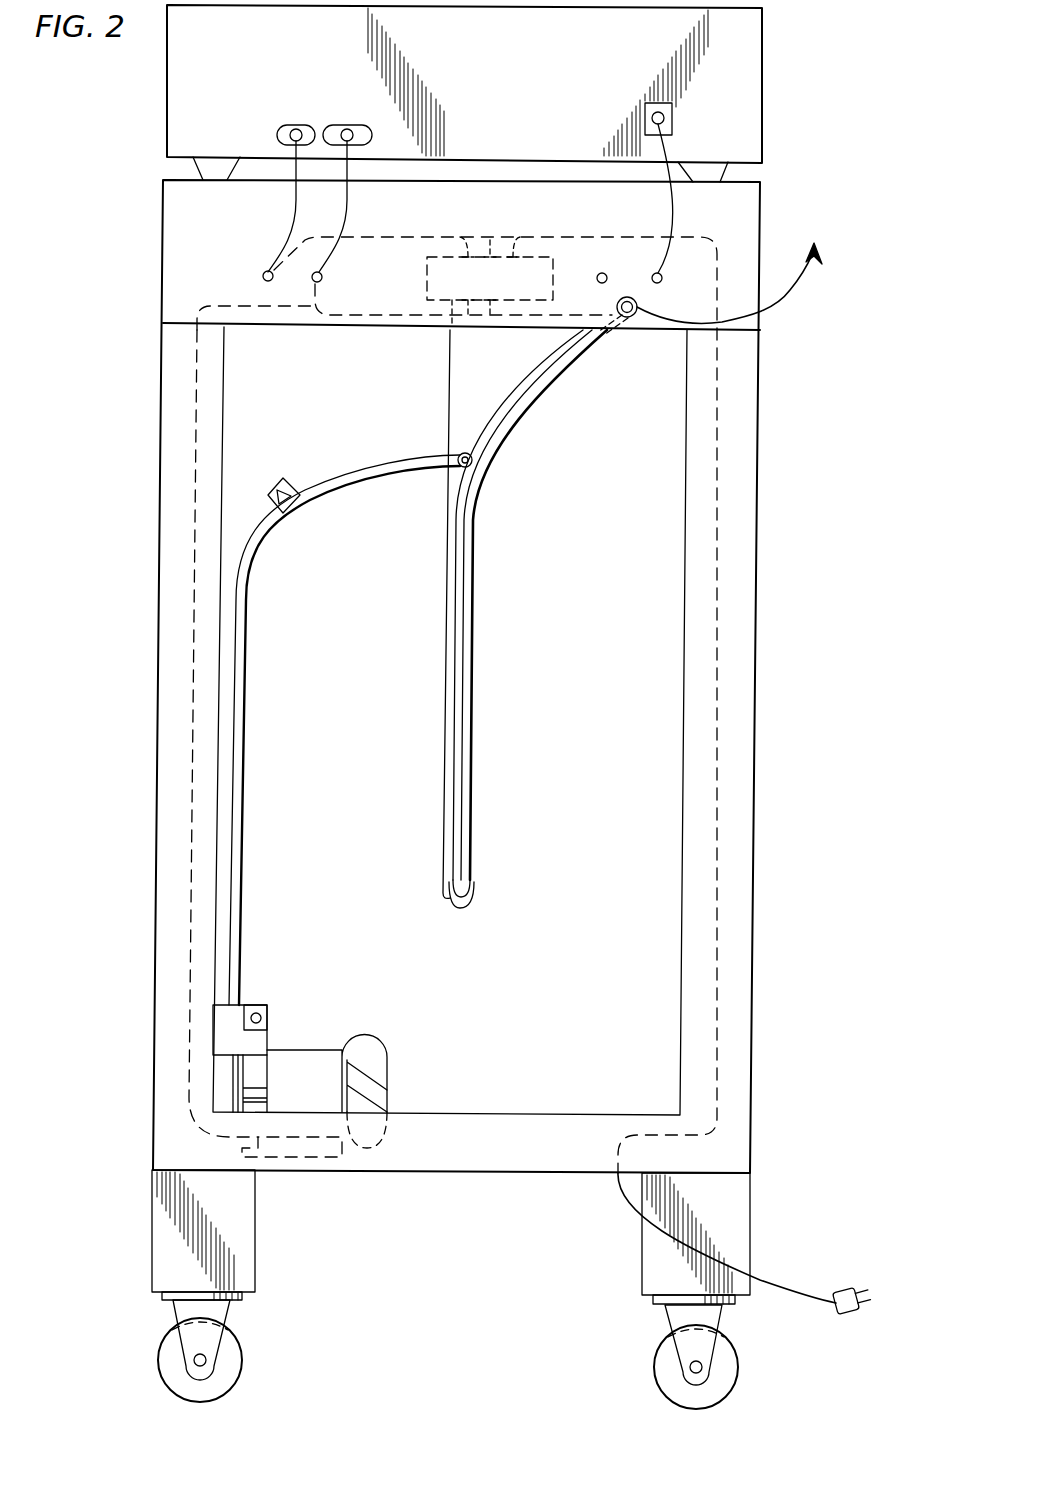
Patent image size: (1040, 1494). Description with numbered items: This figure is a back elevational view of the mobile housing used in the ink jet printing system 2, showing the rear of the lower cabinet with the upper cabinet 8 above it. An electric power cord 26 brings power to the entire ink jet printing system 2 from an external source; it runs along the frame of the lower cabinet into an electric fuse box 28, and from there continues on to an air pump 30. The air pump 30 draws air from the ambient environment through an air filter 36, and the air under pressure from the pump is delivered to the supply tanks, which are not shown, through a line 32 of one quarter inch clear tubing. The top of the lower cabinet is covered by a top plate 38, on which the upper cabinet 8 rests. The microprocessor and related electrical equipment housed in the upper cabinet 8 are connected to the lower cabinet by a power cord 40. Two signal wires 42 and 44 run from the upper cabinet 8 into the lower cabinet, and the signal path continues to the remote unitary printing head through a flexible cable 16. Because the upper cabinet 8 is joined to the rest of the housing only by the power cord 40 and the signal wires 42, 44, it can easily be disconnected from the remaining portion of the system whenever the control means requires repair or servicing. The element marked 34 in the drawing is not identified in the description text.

The ink jet printing system 2 is at (780, 523).
The upper cabinet 8 is at (752, 12).
The flexible cable 16 is at (798, 293).
The electric power cord 26 is at (193, 690).
The electric fuse box 28 is at (503, 270).
The air pump 30 is at (305, 1055).
The line 32 is at (242, 829).
The check valve 34 is at (293, 506).
The air filter 36 is at (263, 1005).
The top plate 38 is at (760, 184).
The power cord 40 is at (667, 157).
The signal wire 42 is at (348, 209).
The signal wire 44 is at (293, 202).